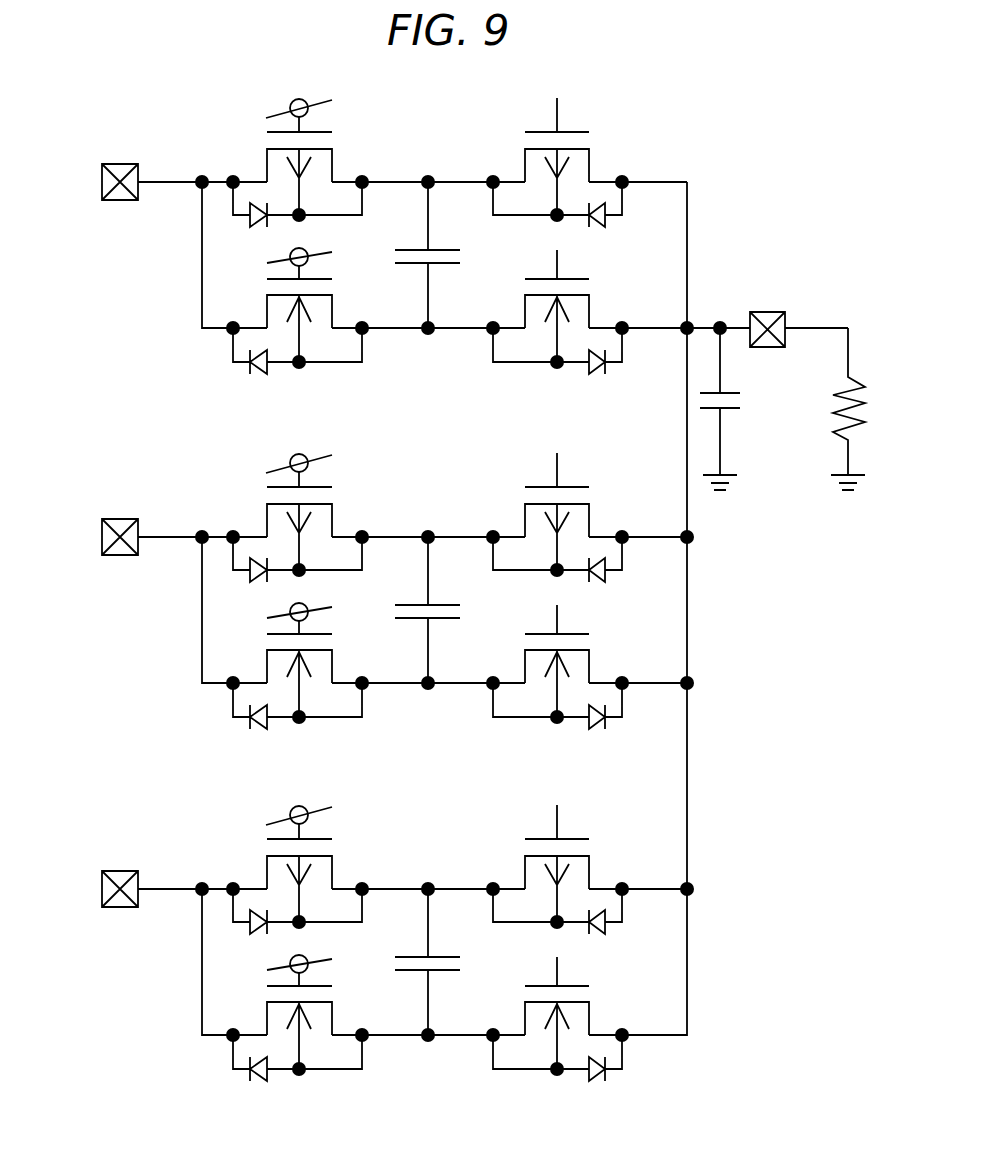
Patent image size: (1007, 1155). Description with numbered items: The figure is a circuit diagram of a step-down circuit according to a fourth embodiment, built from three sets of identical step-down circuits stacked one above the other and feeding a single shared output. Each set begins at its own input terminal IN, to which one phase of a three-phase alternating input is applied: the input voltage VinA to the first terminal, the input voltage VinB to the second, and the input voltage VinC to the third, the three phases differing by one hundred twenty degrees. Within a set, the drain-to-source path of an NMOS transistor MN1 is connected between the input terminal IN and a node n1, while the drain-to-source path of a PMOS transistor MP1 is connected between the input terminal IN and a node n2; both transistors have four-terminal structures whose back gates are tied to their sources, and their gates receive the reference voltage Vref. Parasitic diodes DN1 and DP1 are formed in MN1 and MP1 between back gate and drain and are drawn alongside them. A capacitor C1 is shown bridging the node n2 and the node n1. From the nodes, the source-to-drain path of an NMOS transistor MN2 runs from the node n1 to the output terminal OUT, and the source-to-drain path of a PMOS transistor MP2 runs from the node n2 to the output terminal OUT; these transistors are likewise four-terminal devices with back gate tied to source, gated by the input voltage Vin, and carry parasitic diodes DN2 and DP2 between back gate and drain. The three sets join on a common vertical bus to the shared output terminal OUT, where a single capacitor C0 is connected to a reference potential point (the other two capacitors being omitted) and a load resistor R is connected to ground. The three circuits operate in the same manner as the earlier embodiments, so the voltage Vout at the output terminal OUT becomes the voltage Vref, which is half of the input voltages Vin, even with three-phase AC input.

The PMOS transistor MP1 is at (324, 527).
The NMOS transistor MN1 is at (326, 674).
The PMOS transistor MP2 is at (583, 527).
The NMOS transistor MN2 is at (585, 674).
The parasitic diode DP1 is at (290, 573).
The parasitic diode DN1 is at (295, 719).
The parasitic diode DP2 is at (575, 568).
The parasitic diode DN2 is at (562, 720).
The capacitor C1 is at (430, 608).
The capacitor C0 is at (729, 409).
The load R is at (838, 409).
The input terminal IN is at (120, 162).
The output terminal OUT is at (769, 310).
The node n1 is at (463, 668).
The node n2 is at (463, 523).
The voltage Vref is at (318, 527).
The input voltage Vin is at (540, 538).
The input voltage VinA is at (66, 181).
The input voltage VinB is at (65, 536).
The input voltage VinC is at (66, 888).
The voltage Vout is at (820, 310).